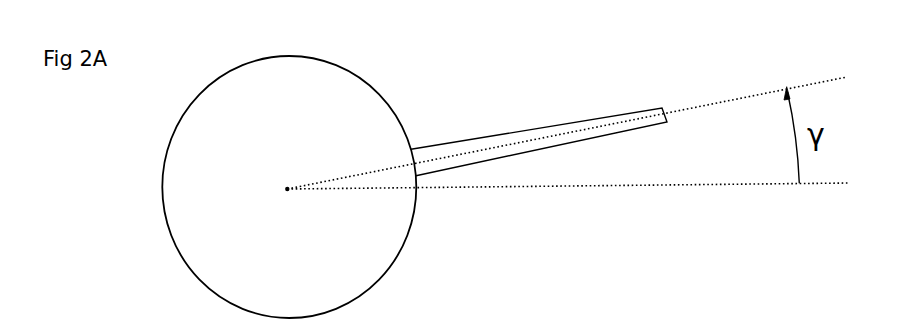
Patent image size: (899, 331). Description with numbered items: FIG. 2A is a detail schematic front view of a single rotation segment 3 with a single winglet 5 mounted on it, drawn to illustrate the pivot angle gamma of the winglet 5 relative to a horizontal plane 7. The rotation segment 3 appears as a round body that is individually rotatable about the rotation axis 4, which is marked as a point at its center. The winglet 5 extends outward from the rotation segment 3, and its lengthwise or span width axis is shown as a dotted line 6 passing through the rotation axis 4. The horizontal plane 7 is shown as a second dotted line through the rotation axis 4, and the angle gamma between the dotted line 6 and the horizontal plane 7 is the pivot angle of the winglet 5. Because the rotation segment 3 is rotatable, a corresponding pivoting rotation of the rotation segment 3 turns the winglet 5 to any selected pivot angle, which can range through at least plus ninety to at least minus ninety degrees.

The rotation segment 3 is at (202, 172).
The rotation axis 4 is at (286, 196).
The winglet 5 is at (493, 157).
The rod axis 6 is at (575, 125).
The horizontal plane 7 is at (580, 189).